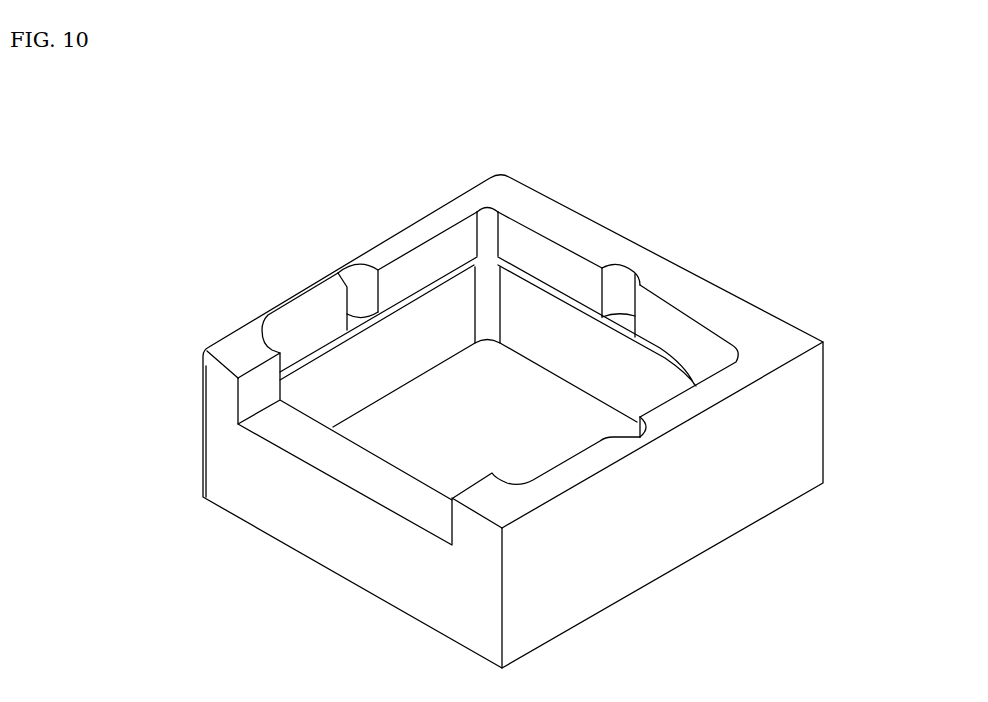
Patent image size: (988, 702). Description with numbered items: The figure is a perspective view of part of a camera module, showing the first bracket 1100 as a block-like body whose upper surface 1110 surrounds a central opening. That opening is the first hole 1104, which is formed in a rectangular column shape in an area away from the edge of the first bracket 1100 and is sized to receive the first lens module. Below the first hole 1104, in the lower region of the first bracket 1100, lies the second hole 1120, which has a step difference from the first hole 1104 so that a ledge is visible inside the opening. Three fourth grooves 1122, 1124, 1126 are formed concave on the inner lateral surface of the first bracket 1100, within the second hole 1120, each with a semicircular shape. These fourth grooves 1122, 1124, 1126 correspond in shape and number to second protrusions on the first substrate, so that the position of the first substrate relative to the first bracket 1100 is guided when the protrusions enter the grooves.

The first bracket 1100 is at (650, 240).
The top surface 1110 is at (529, 188).
The second hole 1120 is at (524, 245).
The first hole 1104 is at (381, 371).
The fourth groove 1122 is at (360, 288).
The fourth groove 1124 is at (622, 292).
The fourth groove 1126 is at (646, 432).